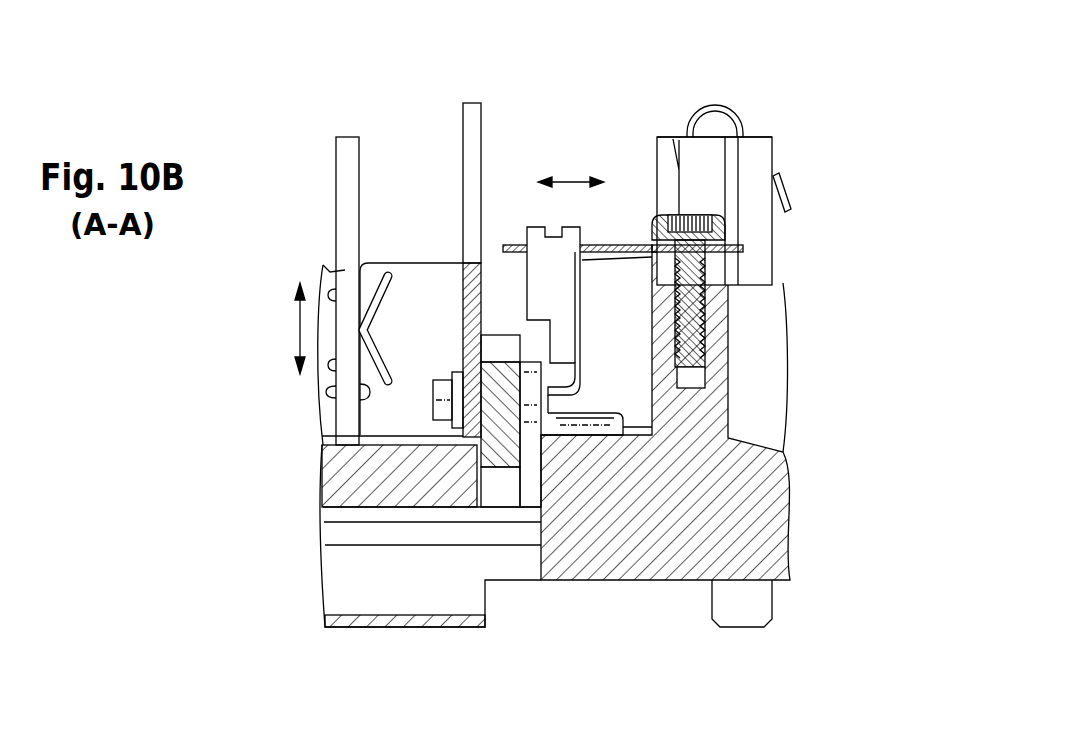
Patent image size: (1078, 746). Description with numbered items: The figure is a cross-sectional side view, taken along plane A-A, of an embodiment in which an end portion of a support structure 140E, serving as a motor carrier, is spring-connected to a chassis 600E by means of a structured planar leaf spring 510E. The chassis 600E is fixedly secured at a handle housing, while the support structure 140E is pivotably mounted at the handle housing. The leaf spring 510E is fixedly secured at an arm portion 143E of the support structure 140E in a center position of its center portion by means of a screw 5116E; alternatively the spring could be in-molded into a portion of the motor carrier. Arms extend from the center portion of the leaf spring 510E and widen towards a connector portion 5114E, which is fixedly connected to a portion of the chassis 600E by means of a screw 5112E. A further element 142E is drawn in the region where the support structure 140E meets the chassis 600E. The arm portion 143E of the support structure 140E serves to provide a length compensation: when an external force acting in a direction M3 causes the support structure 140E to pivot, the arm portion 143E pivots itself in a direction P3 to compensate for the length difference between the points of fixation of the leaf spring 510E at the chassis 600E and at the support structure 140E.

The support structure 140E is at (355, 477).
The fastening pin 142E is at (498, 488).
The arm portion 143E is at (542, 293).
The structured leaf spring 510E is at (621, 228).
The screw 5112E is at (718, 227).
The connector portion 5114E is at (737, 248).
The screw 5116E is at (537, 228).
The chassis 600E is at (760, 515).
The direction M3 is at (298, 327).
The direction P3 is at (568, 180).